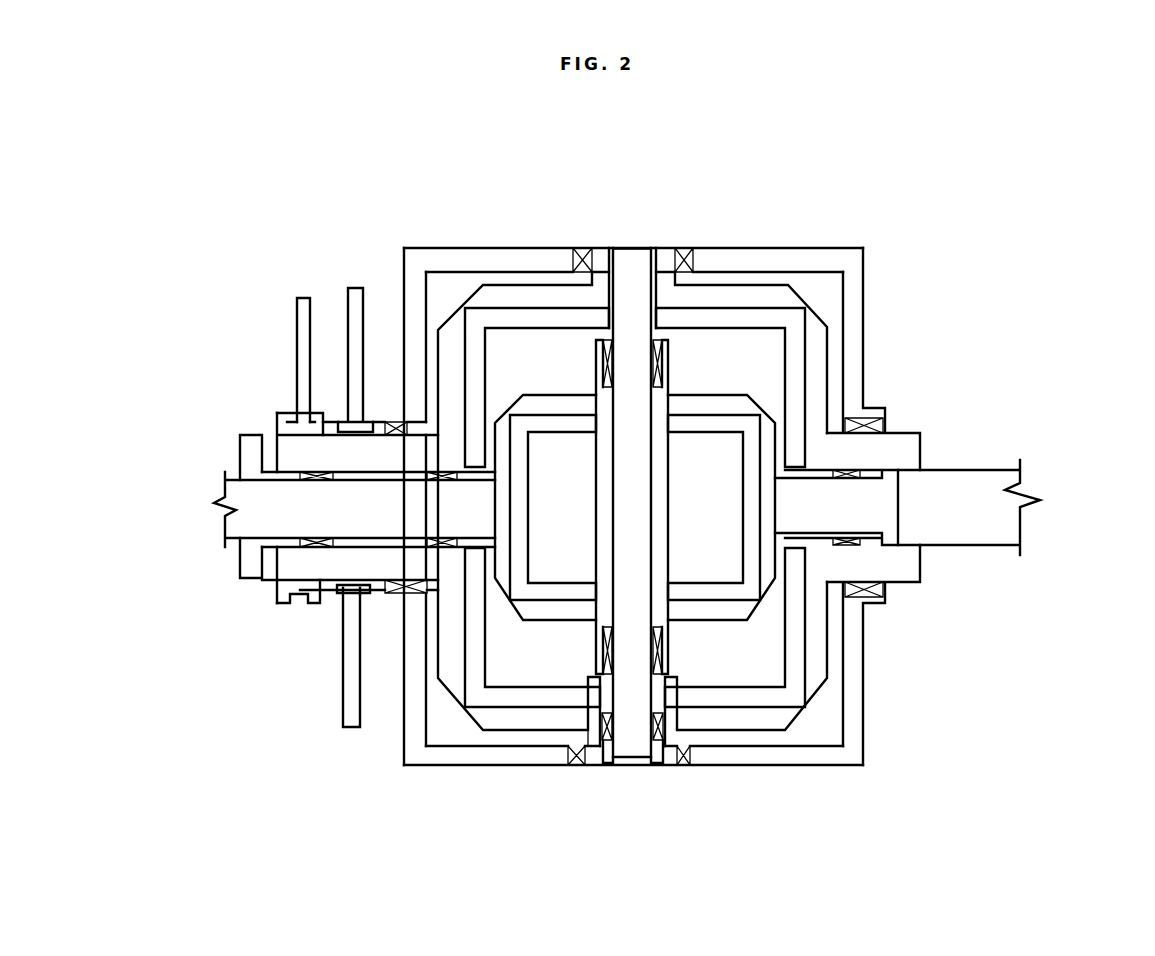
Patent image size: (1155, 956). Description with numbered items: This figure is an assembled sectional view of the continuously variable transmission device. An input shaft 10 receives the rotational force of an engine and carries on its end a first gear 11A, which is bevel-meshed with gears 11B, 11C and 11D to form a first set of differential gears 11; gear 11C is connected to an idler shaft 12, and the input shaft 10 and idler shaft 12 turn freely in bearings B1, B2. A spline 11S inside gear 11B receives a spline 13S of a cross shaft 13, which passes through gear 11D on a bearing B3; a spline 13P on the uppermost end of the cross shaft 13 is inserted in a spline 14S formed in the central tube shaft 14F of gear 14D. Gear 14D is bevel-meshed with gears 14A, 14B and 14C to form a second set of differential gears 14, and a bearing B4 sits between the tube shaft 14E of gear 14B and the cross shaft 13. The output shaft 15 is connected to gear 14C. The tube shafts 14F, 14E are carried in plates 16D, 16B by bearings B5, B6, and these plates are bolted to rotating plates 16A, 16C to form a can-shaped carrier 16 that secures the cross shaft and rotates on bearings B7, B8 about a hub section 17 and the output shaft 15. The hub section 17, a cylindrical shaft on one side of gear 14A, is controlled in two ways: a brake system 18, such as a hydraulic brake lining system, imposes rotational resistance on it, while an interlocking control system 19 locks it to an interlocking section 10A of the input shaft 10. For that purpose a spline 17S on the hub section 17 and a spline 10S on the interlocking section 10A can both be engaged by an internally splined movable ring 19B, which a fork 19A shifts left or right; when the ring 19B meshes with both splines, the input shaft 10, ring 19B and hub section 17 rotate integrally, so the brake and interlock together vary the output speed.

The input shaft 10 is at (309, 518).
The interlocking section 10A is at (247, 553).
The spline 10S is at (240, 576).
The first set of differential gears 11 is at (728, 592).
The first gear 11A is at (523, 493).
The gear 11B is at (568, 583).
The gear 11C is at (743, 515).
The gear 11D is at (683, 423).
The spline 11S is at (592, 665).
The idler shaft 12 is at (870, 523).
The cross shaft 13 is at (646, 512).
The spline 13P is at (637, 253).
The spline 13S is at (648, 757).
The second set of differential gears 14 is at (694, 523).
The gear 14A is at (485, 358).
The gear 14B is at (543, 687).
The gear 14C is at (786, 640).
The gear 14D is at (713, 330).
The tube shaft 14E is at (593, 757).
The central tube shaft 14F is at (670, 253).
The spline 14S is at (607, 253).
The output shaft 15 is at (1042, 487).
The carrier 16 is at (679, 515).
The rotating plate 16A is at (415, 757).
The plate 16B is at (488, 762).
The rotating plate 16C is at (864, 755).
The plate 16D is at (783, 253).
The hub section 17 is at (305, 546).
The spline 17S is at (274, 578).
The brake system 18 is at (356, 288).
The interlocking control system 19 is at (271, 334).
The fork 19A is at (297, 331).
The movable ring 19B is at (290, 414).
The bearing B1 is at (452, 548).
The bearing B2 is at (861, 546).
The bearing B3 is at (601, 363).
The bearing B4 is at (655, 765).
The bearing B5 is at (580, 253).
The bearing B6 is at (690, 753).
The bearing B7 is at (392, 598).
The bearing B8 is at (880, 603).